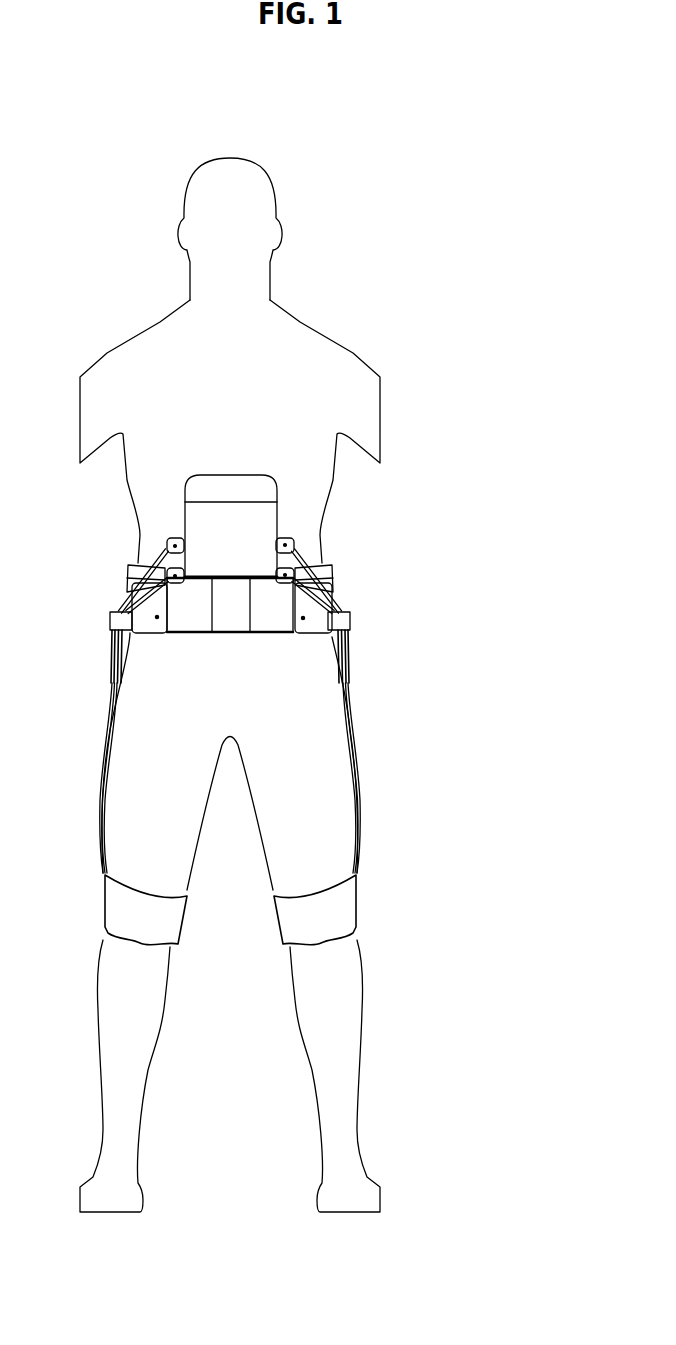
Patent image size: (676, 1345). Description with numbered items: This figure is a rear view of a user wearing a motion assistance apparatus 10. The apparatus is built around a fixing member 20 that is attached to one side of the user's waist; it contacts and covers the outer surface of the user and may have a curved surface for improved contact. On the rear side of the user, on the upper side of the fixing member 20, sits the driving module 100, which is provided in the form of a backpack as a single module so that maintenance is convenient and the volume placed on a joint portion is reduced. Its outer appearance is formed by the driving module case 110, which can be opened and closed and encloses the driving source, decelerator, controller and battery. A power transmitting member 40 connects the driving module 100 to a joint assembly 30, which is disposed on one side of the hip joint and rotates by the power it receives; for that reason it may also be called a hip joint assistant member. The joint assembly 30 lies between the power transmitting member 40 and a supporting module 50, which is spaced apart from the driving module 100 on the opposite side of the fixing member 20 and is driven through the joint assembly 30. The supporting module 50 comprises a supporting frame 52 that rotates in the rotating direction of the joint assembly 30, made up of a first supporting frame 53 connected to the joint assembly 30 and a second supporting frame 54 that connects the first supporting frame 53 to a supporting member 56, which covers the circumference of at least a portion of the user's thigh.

The motion assistance apparatus 10 is at (245, 105).
The driving module 100 is at (260, 468).
The driving module case 110 is at (187, 493).
The fixing member 20 is at (335, 598).
The joint assembly 30 is at (350, 640).
The power transmitting member 40 is at (305, 563).
The supporting module 50 is at (510, 662).
The supporting frame 52 is at (447, 627).
The first supporting frame 53 is at (347, 663).
The second supporting frame 54 is at (347, 683).
The supporting member 56 is at (348, 900).